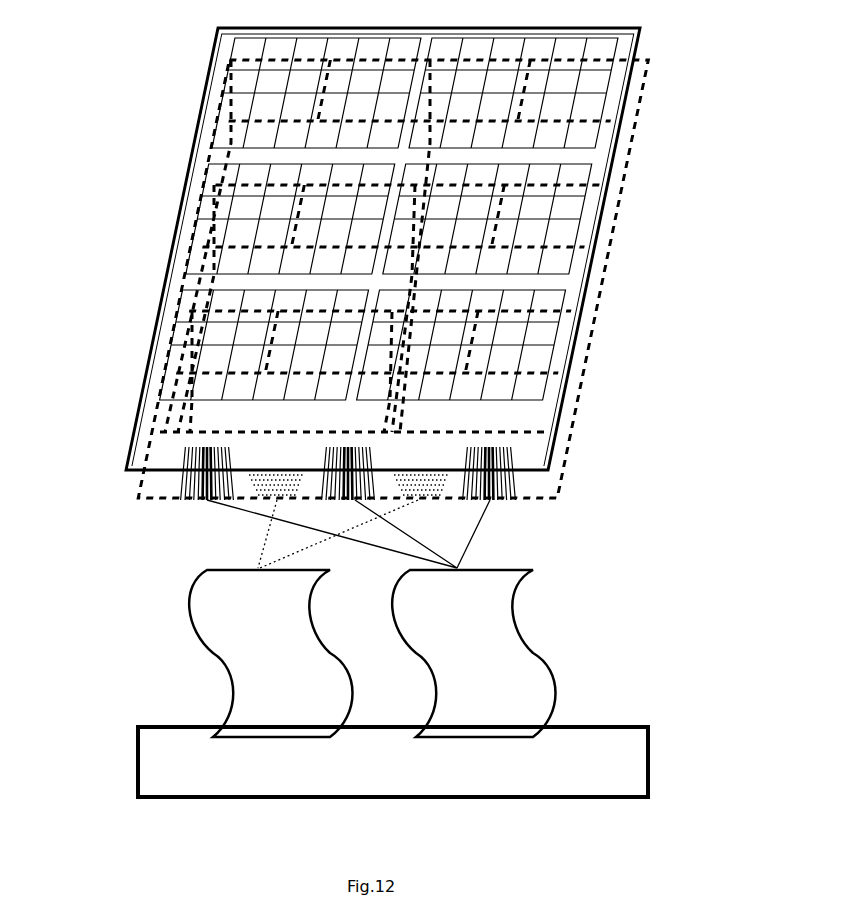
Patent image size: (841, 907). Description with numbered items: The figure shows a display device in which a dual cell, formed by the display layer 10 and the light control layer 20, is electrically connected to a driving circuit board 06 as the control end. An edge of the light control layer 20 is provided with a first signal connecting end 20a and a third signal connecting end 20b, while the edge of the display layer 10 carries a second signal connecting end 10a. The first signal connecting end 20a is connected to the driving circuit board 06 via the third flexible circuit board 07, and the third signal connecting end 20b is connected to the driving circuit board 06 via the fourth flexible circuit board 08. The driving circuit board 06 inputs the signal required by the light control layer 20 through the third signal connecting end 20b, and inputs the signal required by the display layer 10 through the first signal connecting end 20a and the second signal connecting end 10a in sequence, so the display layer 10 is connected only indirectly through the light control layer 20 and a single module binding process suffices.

The driving circuit board 06 is at (403, 772).
The third flexible circuit board 07 is at (525, 688).
The fourth flexible circuit board 08 is at (245, 690).
The display layer 10 is at (565, 452).
The second signal connecting end 10a is at (190, 455).
The light control layer 20 is at (590, 347).
The first signal connecting end 20a is at (183, 478).
The third signal connecting end 20b is at (440, 492).